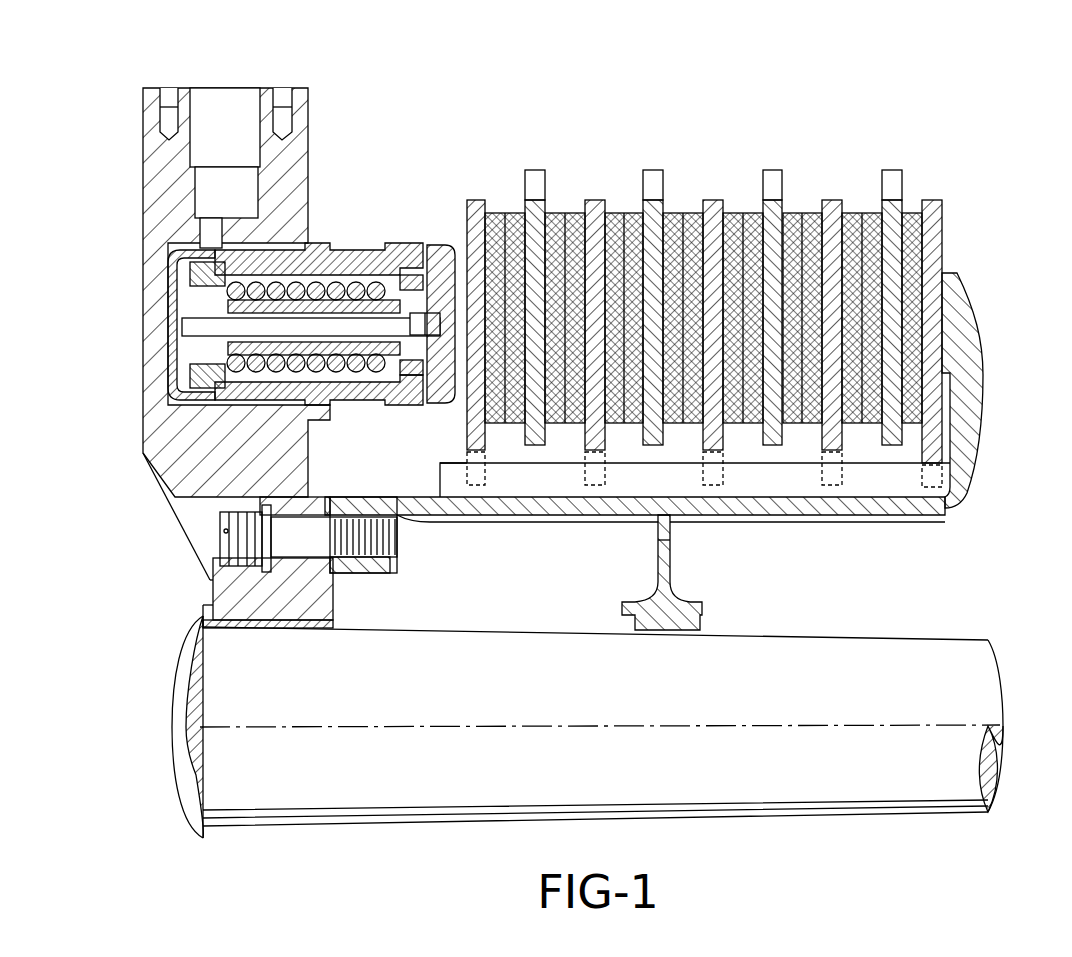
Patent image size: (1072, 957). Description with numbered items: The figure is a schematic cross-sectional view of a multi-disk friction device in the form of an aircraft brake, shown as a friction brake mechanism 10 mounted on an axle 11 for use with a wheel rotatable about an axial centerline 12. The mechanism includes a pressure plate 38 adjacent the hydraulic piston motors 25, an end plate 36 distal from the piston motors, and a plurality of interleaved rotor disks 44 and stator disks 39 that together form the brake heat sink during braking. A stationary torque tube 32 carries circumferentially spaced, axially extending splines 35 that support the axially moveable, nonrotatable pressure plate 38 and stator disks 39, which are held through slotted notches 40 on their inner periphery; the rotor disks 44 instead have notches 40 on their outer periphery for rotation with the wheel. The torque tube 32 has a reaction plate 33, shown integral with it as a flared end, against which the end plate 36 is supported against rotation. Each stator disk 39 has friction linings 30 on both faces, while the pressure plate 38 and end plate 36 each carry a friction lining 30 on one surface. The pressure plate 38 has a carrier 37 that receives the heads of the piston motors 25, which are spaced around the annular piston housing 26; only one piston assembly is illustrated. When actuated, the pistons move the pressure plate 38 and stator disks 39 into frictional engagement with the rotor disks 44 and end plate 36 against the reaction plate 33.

The friction brake mechanism 10 is at (812, 78).
The axle 11 is at (890, 640).
The axial centerline 12 is at (680, 722).
The hydraulic piston motors 25 is at (362, 278).
The piston housing 26 is at (300, 88).
The friction linings 30 is at (515, 213).
The torque tube 32 is at (853, 518).
The reaction plate 33 is at (975, 450).
The splines 35 is at (765, 520).
The end plate 36 is at (942, 200).
The pressure plate carrier 37 is at (467, 432).
The pressure plate 38 is at (467, 200).
The stator disks 39 is at (593, 200).
The notches 40 is at (654, 172).
The rotor disks 44 is at (537, 170).